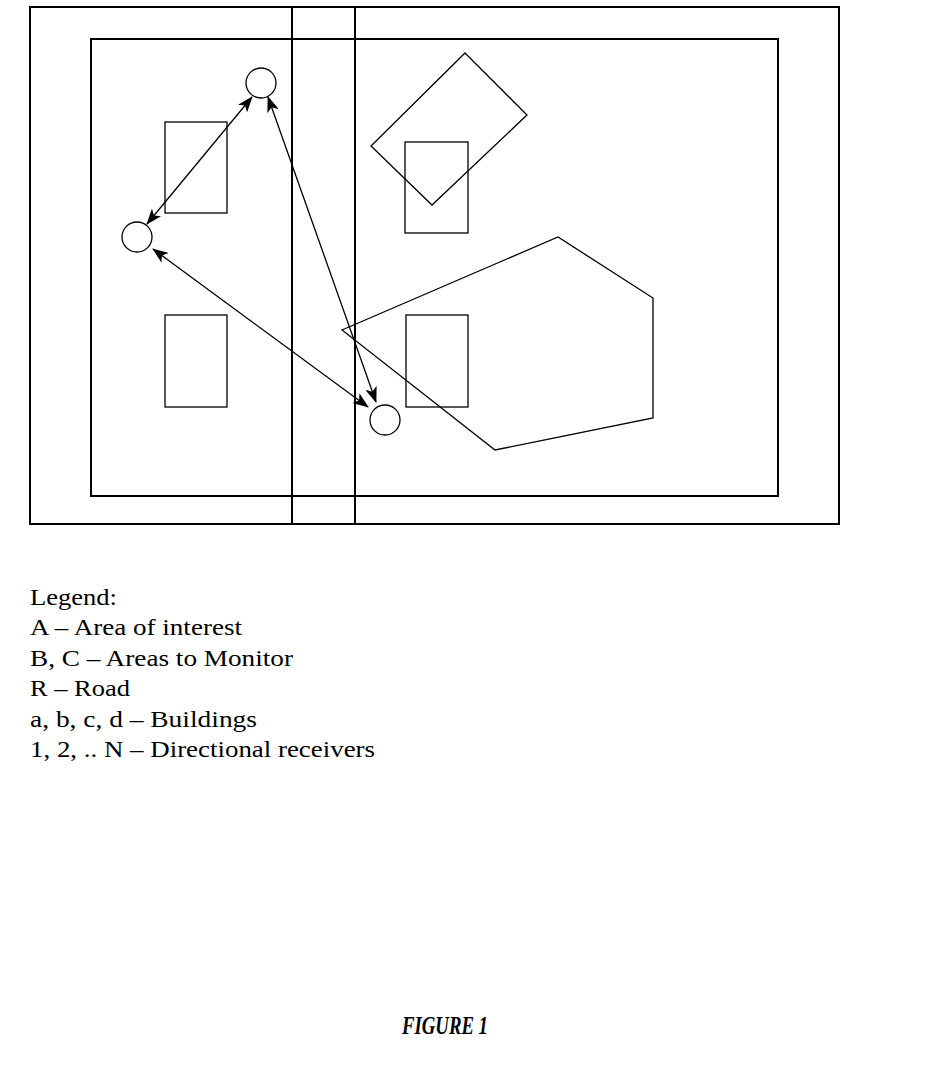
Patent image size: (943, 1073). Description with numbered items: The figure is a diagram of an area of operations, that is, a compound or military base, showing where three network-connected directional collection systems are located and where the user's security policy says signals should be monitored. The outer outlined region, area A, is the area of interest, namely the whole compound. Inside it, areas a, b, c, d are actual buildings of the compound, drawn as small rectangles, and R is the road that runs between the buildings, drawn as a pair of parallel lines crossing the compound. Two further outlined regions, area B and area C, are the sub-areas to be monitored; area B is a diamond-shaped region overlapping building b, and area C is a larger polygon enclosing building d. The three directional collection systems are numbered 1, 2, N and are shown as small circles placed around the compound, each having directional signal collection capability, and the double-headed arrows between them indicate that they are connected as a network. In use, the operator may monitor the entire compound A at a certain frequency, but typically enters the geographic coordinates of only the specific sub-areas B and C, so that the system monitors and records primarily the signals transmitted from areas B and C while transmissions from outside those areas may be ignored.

The area of interest A is at (434, 267).
The area to be monitored B is at (449, 129).
The area to be monitored C is at (497, 343).
The road R is at (323, 265).
The building a is at (196, 167).
The building b is at (436, 187).
The building c is at (196, 361).
The building d is at (437, 361).
The directional collection system 1 is at (261, 83).
The directional collection system 2 is at (137, 237).
The directional collection system N is at (385, 420).